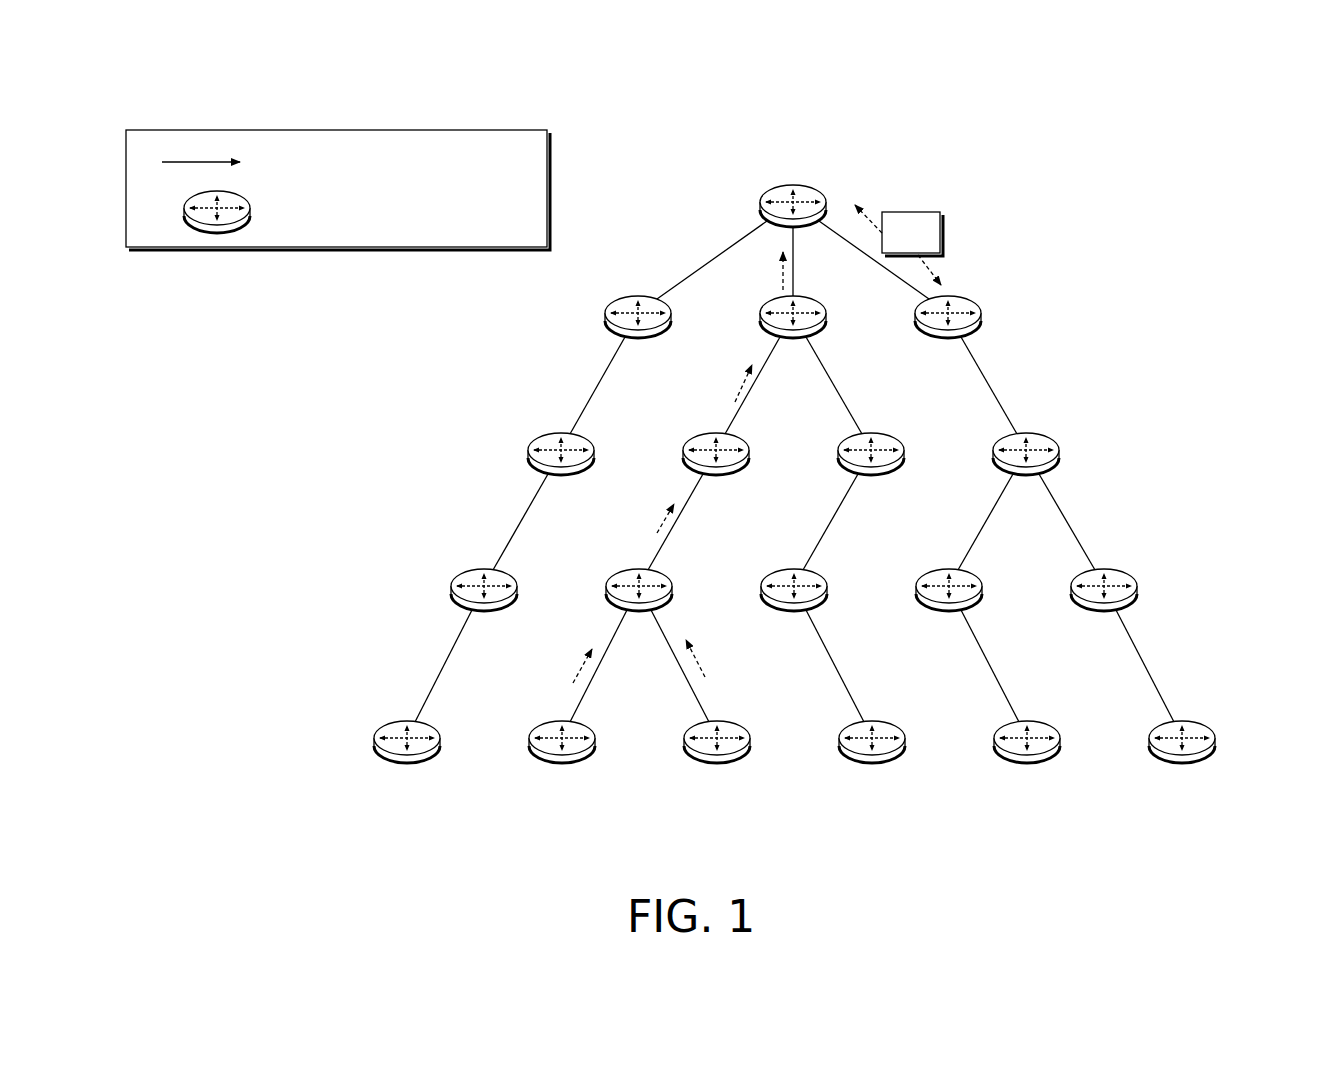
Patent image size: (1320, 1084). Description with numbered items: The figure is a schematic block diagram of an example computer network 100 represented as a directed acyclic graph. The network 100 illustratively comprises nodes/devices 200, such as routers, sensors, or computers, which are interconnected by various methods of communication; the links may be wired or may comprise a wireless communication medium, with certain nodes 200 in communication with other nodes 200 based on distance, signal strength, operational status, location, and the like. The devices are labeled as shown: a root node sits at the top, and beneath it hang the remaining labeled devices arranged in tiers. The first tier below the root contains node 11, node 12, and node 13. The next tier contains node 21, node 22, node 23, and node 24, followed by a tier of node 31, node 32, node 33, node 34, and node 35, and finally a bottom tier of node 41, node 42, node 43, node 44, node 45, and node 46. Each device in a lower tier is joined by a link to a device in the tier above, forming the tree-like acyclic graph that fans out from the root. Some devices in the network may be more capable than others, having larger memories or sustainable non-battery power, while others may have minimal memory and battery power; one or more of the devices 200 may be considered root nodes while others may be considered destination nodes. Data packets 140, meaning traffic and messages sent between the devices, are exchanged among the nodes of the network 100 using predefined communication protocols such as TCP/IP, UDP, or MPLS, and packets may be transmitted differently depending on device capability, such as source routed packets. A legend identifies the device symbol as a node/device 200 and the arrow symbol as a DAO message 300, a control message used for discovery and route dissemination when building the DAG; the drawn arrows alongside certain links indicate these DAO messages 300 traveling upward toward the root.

The computer network 100 is at (1205, 108).
The data packets 140 is at (927, 246).
The nodes/devices 200 is at (292, 212).
The message 300 is at (266, 161).
The node 11 is at (638, 335).
The node 12 is at (793, 335).
The node 13 is at (948, 335).
The node 21 is at (561, 473).
The node 22 is at (716, 473).
The node 23 is at (871, 473).
The node 24 is at (1026, 473).
The node 31 is at (484, 609).
The node 32 is at (639, 609).
The node 33 is at (794, 609).
The node 34 is at (949, 609).
The node 35 is at (1104, 609).
The node 41 is at (407, 761).
The node 42 is at (562, 761).
The node 43 is at (717, 761).
The node 44 is at (872, 761).
The node 45 is at (1027, 761).
The node 46 is at (1182, 761).